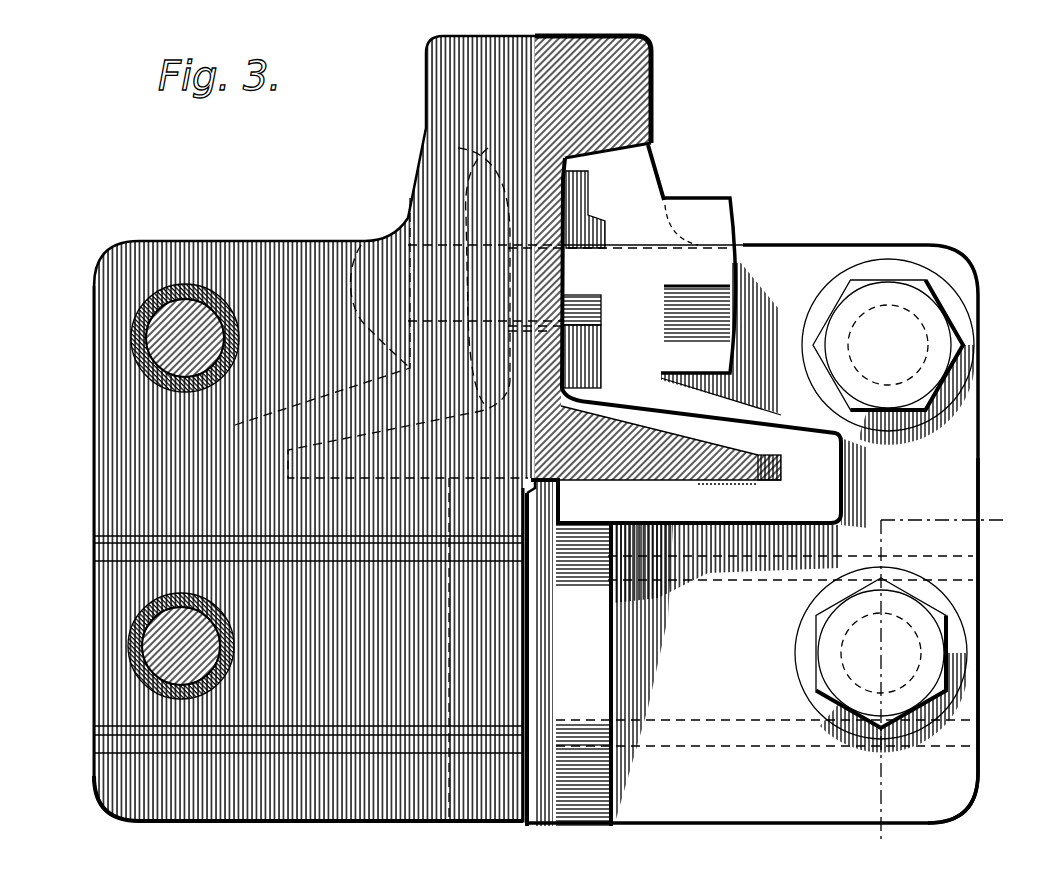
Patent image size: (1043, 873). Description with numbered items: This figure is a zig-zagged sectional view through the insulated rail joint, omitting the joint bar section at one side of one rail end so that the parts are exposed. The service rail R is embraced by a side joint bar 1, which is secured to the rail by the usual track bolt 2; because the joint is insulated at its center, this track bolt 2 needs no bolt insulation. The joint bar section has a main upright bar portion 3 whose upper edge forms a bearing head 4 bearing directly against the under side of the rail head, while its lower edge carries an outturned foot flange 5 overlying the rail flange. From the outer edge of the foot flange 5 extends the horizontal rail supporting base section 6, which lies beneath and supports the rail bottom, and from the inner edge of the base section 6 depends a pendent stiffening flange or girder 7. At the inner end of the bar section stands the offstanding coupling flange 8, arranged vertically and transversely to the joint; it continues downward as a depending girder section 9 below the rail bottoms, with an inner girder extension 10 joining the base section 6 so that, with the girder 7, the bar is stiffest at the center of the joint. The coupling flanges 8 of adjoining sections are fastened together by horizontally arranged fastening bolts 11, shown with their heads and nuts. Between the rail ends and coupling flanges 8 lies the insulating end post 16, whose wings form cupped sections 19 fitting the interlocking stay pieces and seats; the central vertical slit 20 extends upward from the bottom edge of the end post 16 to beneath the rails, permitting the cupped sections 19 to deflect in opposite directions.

The service rail R is at (412, 71).
The side joint bar 1 is at (400, 195).
The track bolt 2 is at (735, 262).
The upright bar portion 3 is at (598, 329).
The bearing head 4 is at (595, 209).
The outturned foot flange 5 is at (711, 417).
The rail supporting base section 6 is at (694, 503).
The pendent stiffening flange or girder 7 is at (573, 653).
The coupling flange 8 is at (814, 240).
The depending girder section 9 is at (948, 592).
The inner girder extension 10 is at (764, 632).
The fastening bolt 11 is at (150, 324).
The insulating end post 16 is at (438, 103).
The cupped section 19 is at (95, 553).
The slit 20 is at (523, 680).